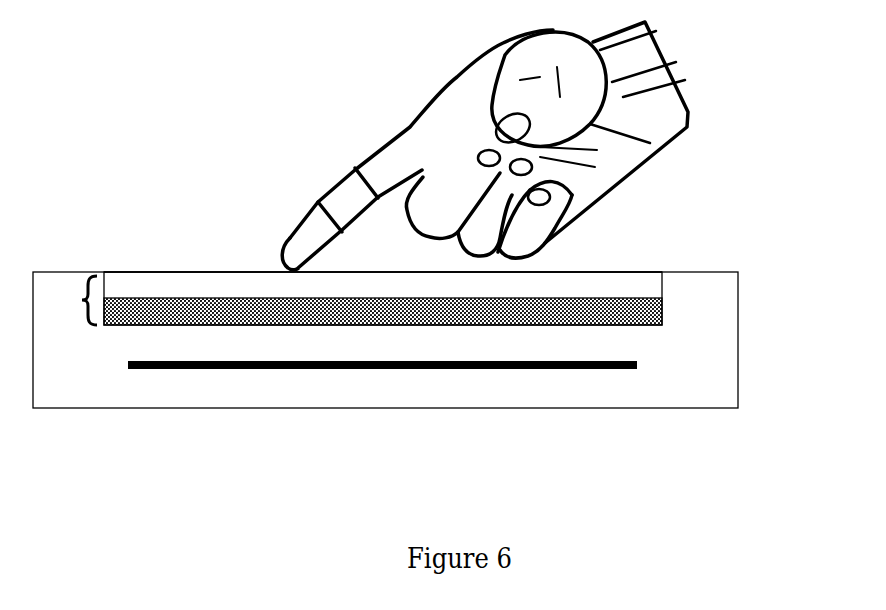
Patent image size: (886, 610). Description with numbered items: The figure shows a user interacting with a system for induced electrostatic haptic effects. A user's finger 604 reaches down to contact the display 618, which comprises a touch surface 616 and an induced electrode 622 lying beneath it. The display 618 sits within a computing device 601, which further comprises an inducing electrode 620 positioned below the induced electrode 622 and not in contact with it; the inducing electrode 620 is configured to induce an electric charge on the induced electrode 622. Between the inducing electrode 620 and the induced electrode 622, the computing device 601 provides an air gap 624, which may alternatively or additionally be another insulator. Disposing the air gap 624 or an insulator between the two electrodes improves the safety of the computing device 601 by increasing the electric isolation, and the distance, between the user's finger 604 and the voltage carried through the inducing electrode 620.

The computing device 601 is at (295, 403).
The finger 604 is at (311, 194).
The touch surface 616 is at (847, 185).
The display 618 is at (128, 210).
The inducing electrode 620 is at (468, 376).
The induced electrode 622 is at (689, 305).
The air gap 624 is at (106, 342).